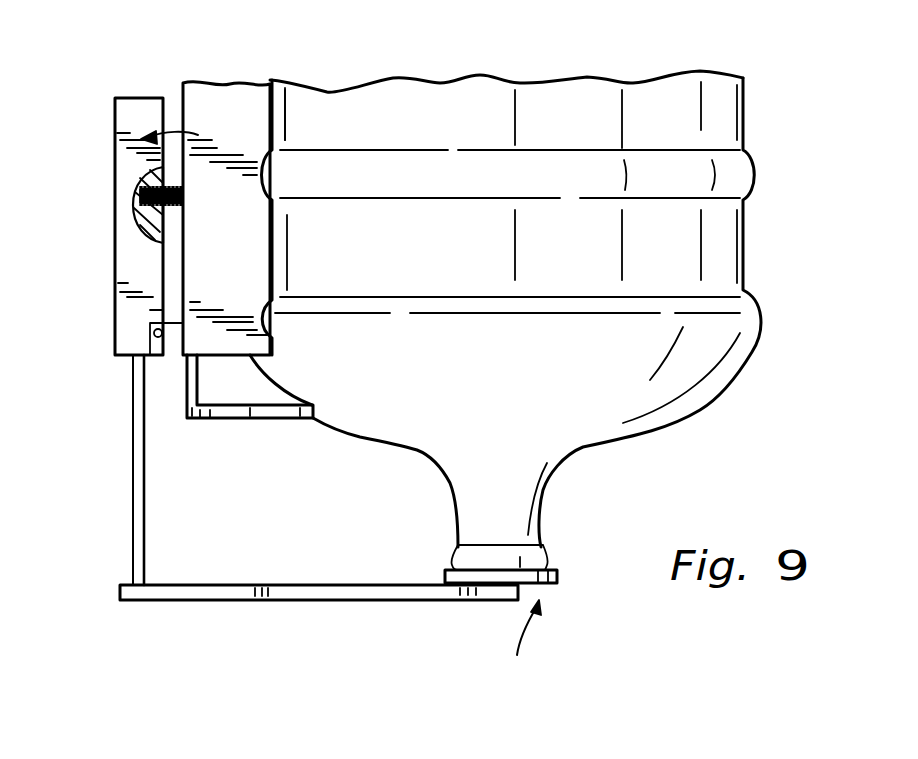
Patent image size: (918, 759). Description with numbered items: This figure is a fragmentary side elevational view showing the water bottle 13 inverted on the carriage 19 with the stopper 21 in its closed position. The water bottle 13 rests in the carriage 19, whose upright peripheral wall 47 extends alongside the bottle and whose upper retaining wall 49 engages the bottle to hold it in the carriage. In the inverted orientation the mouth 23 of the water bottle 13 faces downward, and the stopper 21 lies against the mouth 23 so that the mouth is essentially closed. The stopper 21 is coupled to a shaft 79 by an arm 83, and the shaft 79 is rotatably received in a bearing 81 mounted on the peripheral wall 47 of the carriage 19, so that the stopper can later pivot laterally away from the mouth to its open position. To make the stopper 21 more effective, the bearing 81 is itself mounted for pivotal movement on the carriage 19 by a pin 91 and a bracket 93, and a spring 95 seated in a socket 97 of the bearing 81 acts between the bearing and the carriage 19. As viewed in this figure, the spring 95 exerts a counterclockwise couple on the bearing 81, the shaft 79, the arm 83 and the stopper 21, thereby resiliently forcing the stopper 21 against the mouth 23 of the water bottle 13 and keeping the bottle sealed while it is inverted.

The water bottle 13 is at (700, 110).
The carriage 19 is at (222, 115).
The stopper 21 is at (547, 585).
The mouth 23 is at (540, 558).
The peripheral wall 47 is at (282, 110).
The retaining wall 49 is at (235, 412).
The shaft 79 is at (138, 445).
The bearing 81 is at (140, 108).
The arm 83 is at (307, 585).
The pin 91 is at (153, 331).
The bracket 93 is at (170, 345).
The spring 95 is at (143, 168).
The socket 97 is at (142, 232).